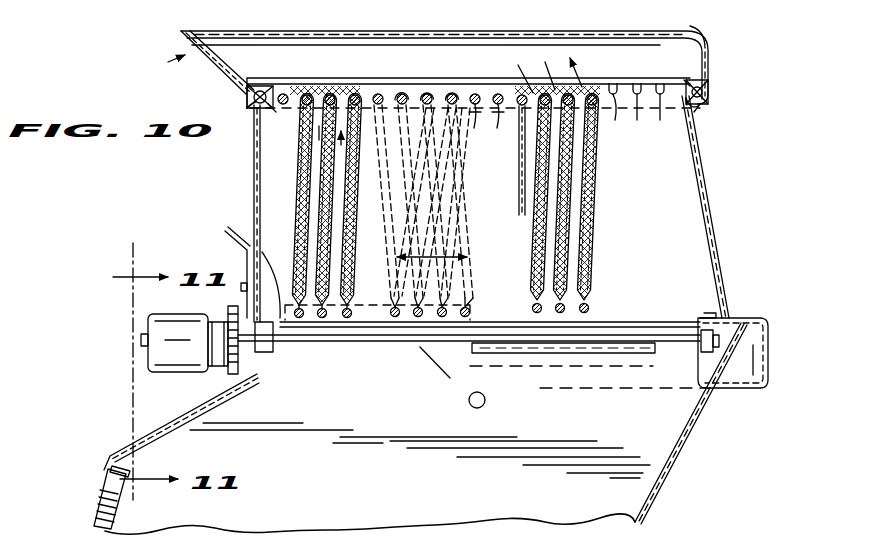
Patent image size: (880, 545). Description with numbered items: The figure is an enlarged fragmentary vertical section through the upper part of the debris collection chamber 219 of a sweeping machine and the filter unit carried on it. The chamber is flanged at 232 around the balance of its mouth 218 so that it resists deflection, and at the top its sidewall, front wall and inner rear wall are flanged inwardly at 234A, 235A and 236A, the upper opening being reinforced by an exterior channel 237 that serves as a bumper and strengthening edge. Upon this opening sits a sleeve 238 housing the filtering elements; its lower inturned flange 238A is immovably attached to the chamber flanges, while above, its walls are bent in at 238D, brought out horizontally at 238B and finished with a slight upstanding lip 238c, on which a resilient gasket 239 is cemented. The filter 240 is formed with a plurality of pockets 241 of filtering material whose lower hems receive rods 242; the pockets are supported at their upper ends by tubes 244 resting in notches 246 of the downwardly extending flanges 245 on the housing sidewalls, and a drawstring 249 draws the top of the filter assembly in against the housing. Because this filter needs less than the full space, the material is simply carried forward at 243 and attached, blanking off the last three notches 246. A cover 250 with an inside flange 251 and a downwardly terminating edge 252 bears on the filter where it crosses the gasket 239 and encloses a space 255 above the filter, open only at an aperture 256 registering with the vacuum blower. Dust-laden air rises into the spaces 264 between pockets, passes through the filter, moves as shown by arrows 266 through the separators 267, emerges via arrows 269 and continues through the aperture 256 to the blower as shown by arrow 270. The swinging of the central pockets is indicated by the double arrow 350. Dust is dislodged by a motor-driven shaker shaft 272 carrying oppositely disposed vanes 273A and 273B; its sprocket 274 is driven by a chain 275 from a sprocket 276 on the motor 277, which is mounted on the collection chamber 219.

The arrow 270 is at (188, 50).
The aperture 256 is at (224, 74).
The upstanding lip 238c is at (246, 98).
The horizontal flange 238B is at (252, 106).
The inward bend 238D is at (252, 118).
The spaces between filter pockets 264 is at (282, 208).
The inturned flange 238A is at (247, 252).
The motor 277 is at (150, 330).
The flange 232 is at (103, 470).
The mouth 218 is at (124, 482).
The gasket 239 is at (289, 80).
The tubes 244 is at (355, 95).
The space 255 is at (433, 67).
The filter 240 is at (422, 158).
The arrows 269 is at (570, 66).
The downwardly terminating edge 252 is at (693, 84).
The cover 250 is at (690, 26).
The flange 251 is at (694, 78).
The drawstring 249 is at (708, 104).
The sleeve 238 is at (697, 152).
The notches 246 is at (572, 119).
The downwardly extending flanges 245 is at (620, 112).
The filtering material carried forward 243 is at (616, 100).
The arrows 266 is at (320, 160).
The separators 267 is at (540, 172).
The double arrow 350 is at (428, 252).
The pockets 241 is at (333, 272).
The rods 242 is at (416, 319).
The inward flange of inner rear wall 236A is at (283, 344).
The vane 273B is at (440, 345).
The shaker shaft 272 is at (453, 347).
The vane 273A is at (582, 348).
The inward flange of sidewall 234A is at (618, 322).
The inward flange of front wall 235A is at (712, 350).
The exterior channel 237 is at (760, 388).
The collection chamber 219 is at (656, 486).
The sprocket 274 is at (565, 539).
The chain 275 is at (648, 539).
The sprocket 276 is at (706, 539).